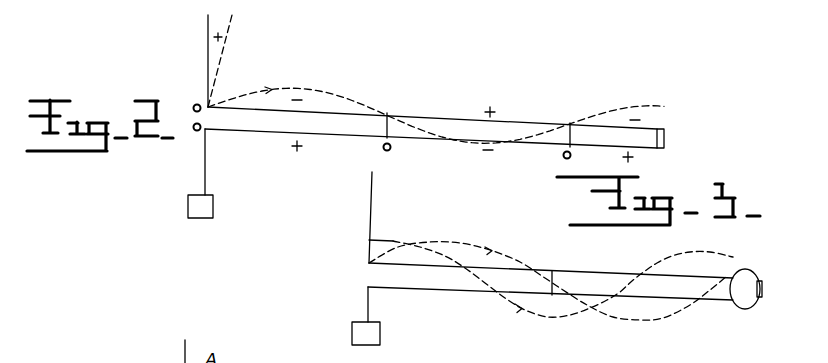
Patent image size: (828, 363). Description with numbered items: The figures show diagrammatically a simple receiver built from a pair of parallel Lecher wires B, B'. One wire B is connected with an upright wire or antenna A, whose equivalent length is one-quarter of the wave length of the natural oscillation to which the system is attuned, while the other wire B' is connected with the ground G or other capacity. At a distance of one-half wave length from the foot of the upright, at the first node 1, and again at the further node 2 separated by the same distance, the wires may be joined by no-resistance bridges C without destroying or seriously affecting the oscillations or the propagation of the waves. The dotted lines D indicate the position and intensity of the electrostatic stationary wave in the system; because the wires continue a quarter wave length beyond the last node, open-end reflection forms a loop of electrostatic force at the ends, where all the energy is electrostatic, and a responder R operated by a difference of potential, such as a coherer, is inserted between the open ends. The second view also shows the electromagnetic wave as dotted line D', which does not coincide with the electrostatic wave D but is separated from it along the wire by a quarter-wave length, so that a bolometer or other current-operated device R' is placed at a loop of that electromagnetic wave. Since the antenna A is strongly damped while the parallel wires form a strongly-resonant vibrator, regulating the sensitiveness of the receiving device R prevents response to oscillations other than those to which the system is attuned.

In FIG. 2, the upright wire or antenna A is at (208, 52).
In FIG. 3, the upright wire or antenna A is at (372, 207).
In FIG. 2, the Lecher wire B is at (432, 108).
In FIG. 3, the Lecher wire B is at (551, 260).
In FIG. 2, the Lecher wire B' is at (431, 156).
In FIG. 3, the Lecher wire B' is at (550, 309).
In FIG. 2, the no-resistance bridge C is at (580, 137).
In FIG. 3, the no-resistance bridge C is at (556, 284).
In FIG. 2, the electrostatic wave (dotted line) D is at (436, 101).
In FIG. 3, the electrostatic wave (dotted line) D is at (548, 271).
In FIG. 3, the electromagnetic wave (dotted line) D' is at (551, 294).
In FIG. 2, the ground G is at (200, 173).
In FIG. 3, the ground G is at (366, 316).
In FIG. 2, the responder R is at (675, 140).
In FIG. 3, the bolometer or current-operated device R' is at (761, 289).
In FIG. 2, the first node 1 is at (392, 121).
In FIG. 2, the node 2 is at (565, 129).